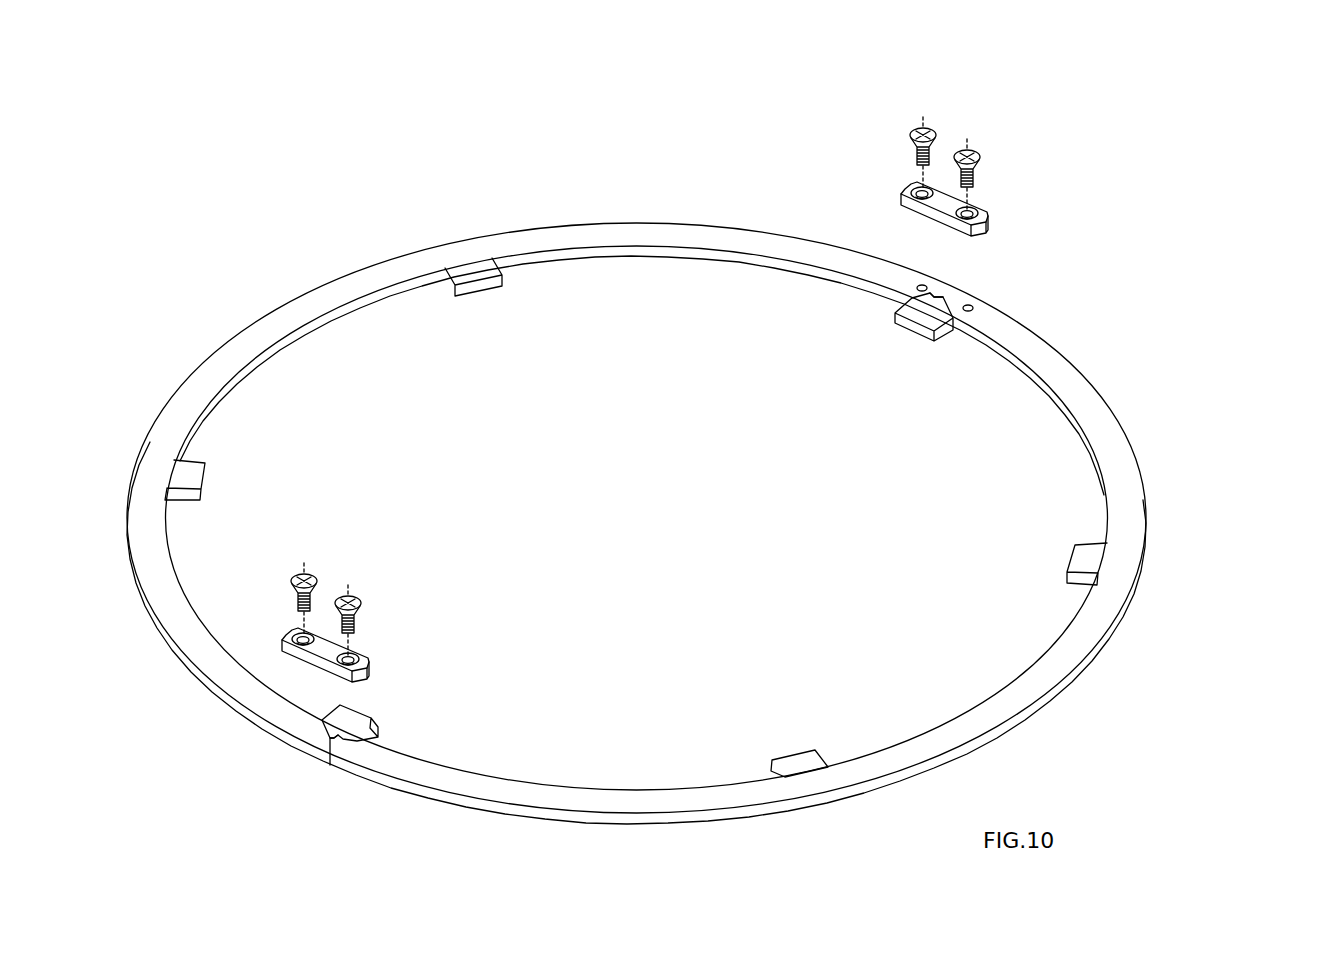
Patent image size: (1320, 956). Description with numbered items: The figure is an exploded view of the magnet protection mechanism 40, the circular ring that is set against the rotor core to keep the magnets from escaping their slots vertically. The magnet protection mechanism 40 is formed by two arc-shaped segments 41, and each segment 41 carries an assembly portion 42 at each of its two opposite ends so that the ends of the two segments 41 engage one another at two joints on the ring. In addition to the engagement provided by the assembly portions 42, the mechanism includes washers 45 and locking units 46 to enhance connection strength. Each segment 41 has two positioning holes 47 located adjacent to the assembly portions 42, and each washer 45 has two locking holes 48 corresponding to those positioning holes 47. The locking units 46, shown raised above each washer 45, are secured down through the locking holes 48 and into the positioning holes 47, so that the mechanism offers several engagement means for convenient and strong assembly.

The magnet protection mechanism 40 is at (1210, 716).
The segment 41 is at (611, 233).
The assembly portion 42 is at (946, 297).
The washer 45 is at (991, 224).
The locking unit 46 is at (920, 126).
The positioning hole 47 is at (920, 284).
The locking hole 48 is at (916, 185).